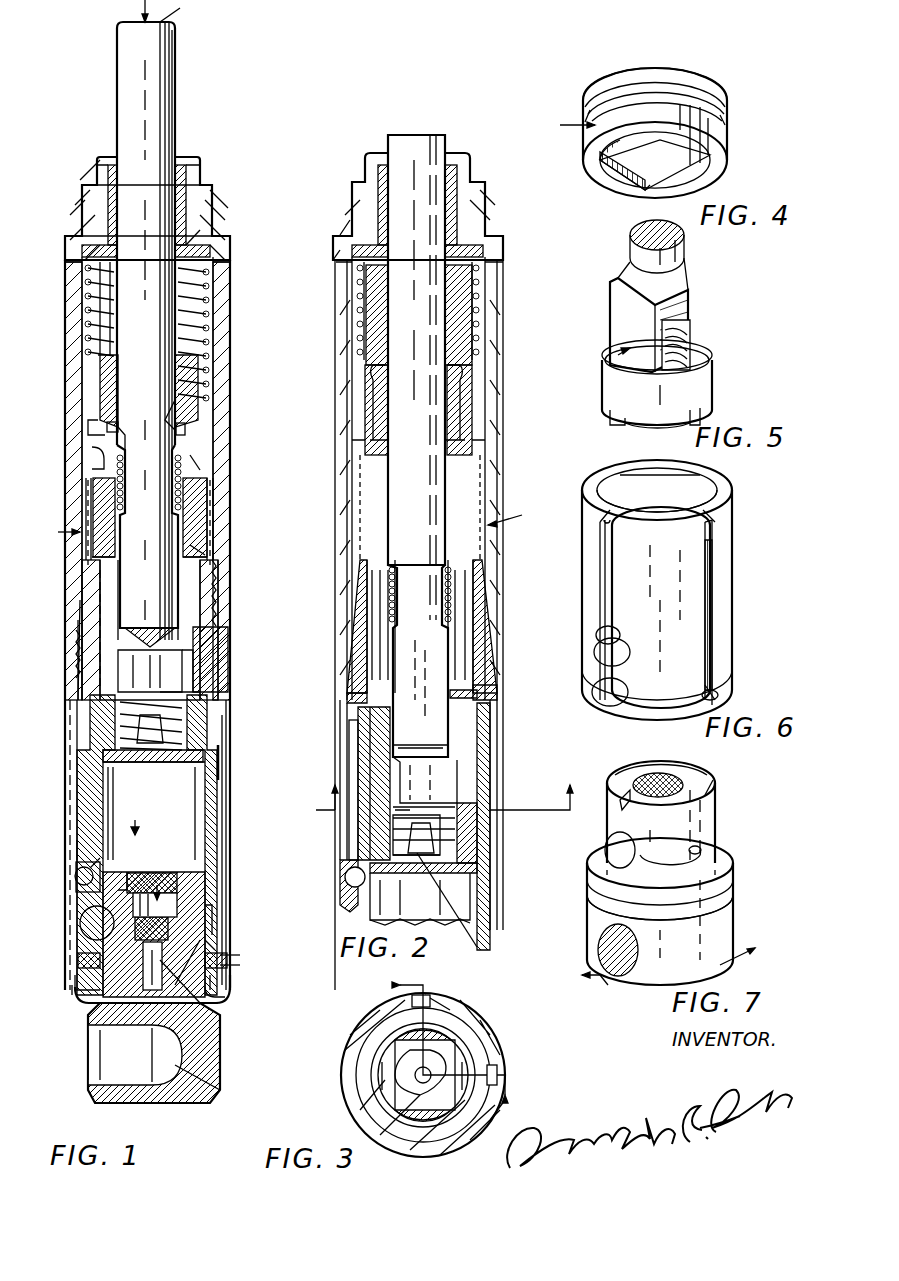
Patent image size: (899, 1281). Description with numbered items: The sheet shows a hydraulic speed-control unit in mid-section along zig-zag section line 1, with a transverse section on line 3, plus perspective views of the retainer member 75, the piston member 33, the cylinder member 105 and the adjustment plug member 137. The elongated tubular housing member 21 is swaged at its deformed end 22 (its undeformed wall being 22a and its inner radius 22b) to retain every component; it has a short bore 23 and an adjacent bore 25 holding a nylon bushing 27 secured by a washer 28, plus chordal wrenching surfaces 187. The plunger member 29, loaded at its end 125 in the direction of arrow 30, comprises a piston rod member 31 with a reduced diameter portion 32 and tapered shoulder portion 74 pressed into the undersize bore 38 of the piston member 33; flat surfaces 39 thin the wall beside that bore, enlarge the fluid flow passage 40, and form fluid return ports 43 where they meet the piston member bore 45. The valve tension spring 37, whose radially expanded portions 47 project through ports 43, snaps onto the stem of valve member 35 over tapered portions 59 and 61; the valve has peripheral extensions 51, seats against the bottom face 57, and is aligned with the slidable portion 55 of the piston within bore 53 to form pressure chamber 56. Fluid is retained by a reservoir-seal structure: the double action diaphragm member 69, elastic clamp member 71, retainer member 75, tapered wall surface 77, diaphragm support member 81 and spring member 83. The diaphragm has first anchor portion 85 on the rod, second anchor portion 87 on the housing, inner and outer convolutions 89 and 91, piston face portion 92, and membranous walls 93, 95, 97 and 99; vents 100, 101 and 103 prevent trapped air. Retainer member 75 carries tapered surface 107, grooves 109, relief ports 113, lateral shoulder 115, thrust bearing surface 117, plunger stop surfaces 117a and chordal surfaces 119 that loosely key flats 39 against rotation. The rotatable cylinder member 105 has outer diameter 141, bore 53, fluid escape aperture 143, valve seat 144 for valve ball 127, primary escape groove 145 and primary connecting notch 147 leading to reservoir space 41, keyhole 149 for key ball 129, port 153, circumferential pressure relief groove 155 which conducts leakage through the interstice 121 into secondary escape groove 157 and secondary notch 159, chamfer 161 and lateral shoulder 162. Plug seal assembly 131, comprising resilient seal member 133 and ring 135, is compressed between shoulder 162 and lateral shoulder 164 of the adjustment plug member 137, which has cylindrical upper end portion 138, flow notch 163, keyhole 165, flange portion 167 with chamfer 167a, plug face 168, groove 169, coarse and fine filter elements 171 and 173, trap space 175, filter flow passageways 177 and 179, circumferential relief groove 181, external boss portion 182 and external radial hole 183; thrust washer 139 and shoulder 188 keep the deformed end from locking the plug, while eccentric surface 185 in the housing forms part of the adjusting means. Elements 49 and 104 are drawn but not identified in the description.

In FIG. 3, the zig-zag section line 1 is at (440, 1052).
In FIG. 7, the zig-zag section line 1 is at (666, 965).
In FIG. 2, the section line 3 is at (440, 784).
In FIG. 1, the tubular housing member 21 is at (195, 152).
In FIG. 1, the deformed end of housing 22 is at (90, 1003).
In FIG. 1, the housing end wall before deformation 22a is at (90, 1012).
In FIG. 1, the inner radius of deformed end 22b is at (200, 1003).
In FIG. 1, the short bore 23 is at (186, 165).
In FIG. 1, the adjacent bore 25 is at (186, 190).
In FIG. 1, the bushing 27 is at (186, 230).
In FIG. 1, the washer 28 is at (212, 248).
In FIG. 1, the plunger member 29 is at (178, 72).
In FIG. 1, the load arrow 30 is at (145, 8).
In FIG. 1, the piston rod member 31 is at (175, 98).
In FIG. 5, the piston rod member 31 is at (680, 252).
In FIG. 1, the reduced diameter portion 32 is at (115, 510).
In FIG. 1, the piston member 33 is at (92, 575).
In FIG. 2, the piston member 33 is at (372, 722).
In FIG. 5, the piston member 33 is at (620, 355).
In FIG. 1, the valve member 35 is at (160, 764).
In FIG. 2, the valve member 35 is at (470, 890).
In FIG. 5, the valve member 35 is at (625, 420).
In FIG. 1, the valve tension spring 37 is at (175, 752).
In FIG. 2, the valve tension spring 37 is at (442, 830).
In FIG. 5, the valve tension spring 37 is at (690, 335).
In FIG. 2, the undersize bore 38 is at (450, 700).
In FIG. 1, the flat surfaces 39 is at (207, 610).
In FIG. 2, the flat surfaces 39 is at (360, 585).
In FIG. 3, the flat surfaces 39 is at (460, 1030).
In FIG. 5, the flat surfaces 39 is at (690, 292).
In FIG. 1, the fluid flow passage 40 is at (207, 560).
In FIG. 2, the reservoir space 41 is at (470, 497).
In FIG. 2, the fluid return ports 43 is at (415, 790).
In FIG. 5, the fluid return ports 43 is at (690, 320).
In FIG. 1, the piston member bore 45 is at (145, 748).
In FIG. 2, the piston member bore 45 is at (470, 850).
In FIG. 3, the piston member bore 45 is at (455, 1020).
In FIG. 2, the radially expanded portions 47 is at (465, 803).
In FIG. 3, the radially expanded portions 47 is at (462, 1050).
In FIG. 5, the radially expanded portions 47 is at (700, 358).
In FIG. 2, the flange 49 is at (458, 807).
In FIG. 5, the flange 49 is at (690, 375).
In FIG. 2, the peripheral extensions 51 is at (480, 875).
In FIG. 5, the peripheral extensions 51 is at (700, 415).
In FIG. 1, the cylinder bore 53 is at (222, 790).
In FIG. 2, the cylinder bore 53 is at (350, 745).
In FIG. 6, the cylinder bore 53 is at (720, 495).
In FIG. 2, the slidable portion of piston member 55 is at (360, 838).
In FIG. 5, the slidable portion of piston member 55 is at (620, 395).
In FIG. 1, the pressure chamber 56 is at (110, 785).
In FIG. 5, the bottom face of piston member 57 is at (640, 425).
In FIG. 2, the tapered portion 59 is at (450, 852).
In FIG. 2, the tapered portion 61 is at (477, 947).
In FIG. 1, the double action diaphragm member 69 is at (122, 430).
In FIG. 2, the double action diaphragm member 69 is at (451, 462).
In FIG. 1, the elastic clamp member 71 is at (93, 483).
In FIG. 1, the tapered shoulder portion 74 is at (125, 428).
In FIG. 1, the retainer member 75 is at (88, 680).
In FIG. 4, the retainer member 75 is at (631, 133).
In FIG. 1, the tapered wall surface 77 is at (78, 635).
In FIG. 1, the diaphragm support member 81 is at (200, 360).
In FIG. 2, the diaphragm support member 81 is at (480, 370).
In FIG. 1, the spring member 83 is at (210, 330).
In FIG. 2, the spring member 83 is at (480, 308).
In FIG. 1, the first anchor portion 85 is at (92, 455).
In FIG. 1, the second anchor portion 87 is at (80, 610).
In FIG. 1, the inner convolution 89 is at (200, 420).
In FIG. 1, the outer convolution 91 is at (212, 495).
In FIG. 1, the piston face portion 92 is at (200, 545).
In FIG. 1, the innermost membranous wall 93 is at (177, 400).
In FIG. 1, the membranous wall 95 is at (186, 432).
In FIG. 1, the membranous wall 97 is at (200, 465).
In FIG. 1, the outermost membranous wall 99 is at (212, 510).
In FIG. 1, the housing vent 100 is at (216, 272).
In FIG. 2, the housing vent 100 is at (490, 272).
In FIG. 1, the support member vent 101 is at (107, 425).
In FIG. 1, the support member vent 103 is at (90, 427).
In FIG. 1, the guide 104 is at (100, 325).
In FIG. 1, the rotatable cylinder member 105 is at (70, 760).
In FIG. 6, the rotatable cylinder member 105 is at (728, 590).
In FIG. 1, the tapered surface 107 is at (222, 625).
In FIG. 4, the tapered surface 107 is at (722, 110).
In FIG. 1, the grooves 109 is at (100, 585).
In FIG. 1, the relief ports 113 is at (220, 588).
In FIG. 1, the lateral shoulder 115 is at (76, 655).
In FIG. 4, the lateral shoulder 115 is at (590, 105).
In FIG. 1, the thrust bearing surface 117 is at (200, 692).
In FIG. 4, the thrust bearing surface 117 is at (605, 160).
In FIG. 1, the plunger stop surfaces 117a is at (195, 688).
In FIG. 4, the plunger stop surfaces 117a is at (635, 178).
In FIG. 1, the chordal surfaces 119 is at (200, 660).
In FIG. 3, the chordal surfaces 119 is at (462, 1062).
In FIG. 4, the chordal surfaces 119 is at (605, 163).
In FIG. 1, the interstice 121 is at (78, 895).
In FIG. 1, the plunger end 125 is at (180, 8).
In FIG. 1, the valve ball 127 is at (78, 870).
In FIG. 1, the key ball 129 is at (84, 925).
In FIG. 1, the plug seal assembly 131 is at (75, 990).
In FIG. 1, the resilient seal member 133 is at (78, 960).
In FIG. 1, the ring 135 is at (75, 985).
In FIG. 1, the rotatable adjustment plug member 137 is at (222, 1092).
In FIG. 7, the rotatable adjustment plug member 137 is at (660, 960).
In FIG. 1, the cylindrical upper end portion 138 is at (203, 905).
In FIG. 7, the cylindrical upper end portion 138 is at (710, 810).
In FIG. 1, the thrust washer 139 is at (125, 1055).
In FIG. 1, the outer diameter 141 is at (227, 715).
In FIG. 6, the outer diameter 141 is at (612, 565).
In FIG. 1, the fluid escape aperture 143 is at (120, 840).
In FIG. 6, the fluid escape aperture 143 is at (600, 650).
In FIG. 1, the valve seat 144 is at (84, 886).
In FIG. 6, the valve seat 144 is at (605, 630).
In FIG. 1, the primary escape groove 145 is at (80, 735).
In FIG. 3, the primary escape groove 145 is at (425, 1000).
In FIG. 6, the primary escape groove 145 is at (600, 590).
In FIG. 1, the primary connecting notch 147 is at (95, 700).
In FIG. 6, the primary connecting notch 147 is at (605, 525).
In FIG. 2, the keyhole 149 is at (350, 905).
In FIG. 6, the keyhole 149 is at (598, 685).
In FIG. 1, the port 153 is at (160, 950).
In FIG. 6, the port 153 is at (718, 700).
In FIG. 1, the circumferential pressure relief groove 155 is at (200, 935).
In FIG. 6, the circumferential pressure relief groove 155 is at (715, 690).
In FIG. 1, the secondary escape groove 157 is at (220, 765).
In FIG. 3, the secondary escape groove 157 is at (490, 1085).
In FIG. 6, the secondary escape groove 157 is at (715, 565).
In FIG. 1, the secondary notch 159 is at (223, 735).
In FIG. 6, the secondary notch 159 is at (715, 525).
In FIG. 2, the chamfer 161 is at (350, 698).
In FIG. 6, the chamfer 161 is at (722, 510).
In FIG. 1, the lateral shoulder 162 is at (222, 962).
In FIG. 1, the flow notch 163 is at (125, 872).
In FIG. 7, the flow notch 163 is at (625, 800).
In FIG. 1, the lateral shoulder 164 is at (232, 968).
In FIG. 7, the lateral shoulder 164 is at (605, 845).
In FIG. 7, the keyhole 165 is at (690, 868).
In FIG. 7, the flange portion 167 is at (733, 888).
In FIG. 1, the chamfer 167a is at (225, 997).
In FIG. 1, the plug face 168 is at (203, 865).
In FIG. 7, the plug face 168 is at (705, 780).
In FIG. 1, the groove 169 is at (120, 1040).
In FIG. 7, the groove 169 is at (700, 918).
In FIG. 1, the coarse filter element 171 is at (165, 880).
In FIG. 7, the coarse filter element 171 is at (665, 775).
In FIG. 1, the fine filter element 173 is at (232, 955).
In FIG. 1, the trap space 175 is at (180, 880).
In FIG. 1, the filter flow passageway 177 is at (175, 985).
In FIG. 1, the filter flow passageway 179 is at (200, 1003).
In FIG. 7, the filter flow passageway 179 is at (700, 852).
In FIG. 1, the circumferential relief groove 181 is at (212, 912).
In FIG. 7, the circumferential relief groove 181 is at (697, 848).
In FIG. 1, the external boss portion 182 is at (220, 1070).
In FIG. 1, the external radial hole 183 is at (175, 1068).
In FIG. 7, the external radial hole 183 is at (637, 960).
In FIG. 1, the eccentric surface 185 is at (80, 850).
In FIG. 1, the chordal surfaces 187 is at (82, 205).
In FIG. 1, the shoulder 188 is at (220, 983).